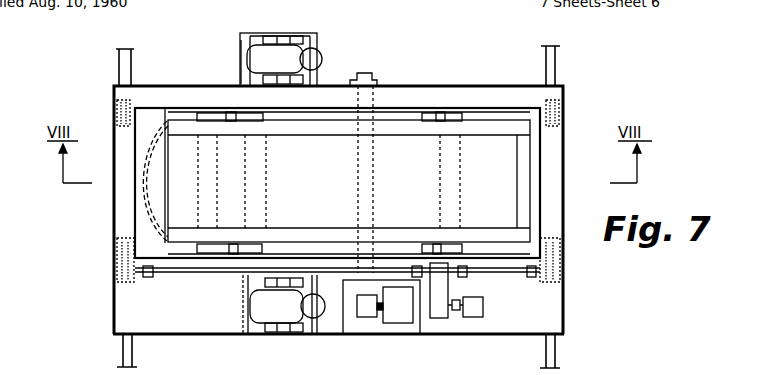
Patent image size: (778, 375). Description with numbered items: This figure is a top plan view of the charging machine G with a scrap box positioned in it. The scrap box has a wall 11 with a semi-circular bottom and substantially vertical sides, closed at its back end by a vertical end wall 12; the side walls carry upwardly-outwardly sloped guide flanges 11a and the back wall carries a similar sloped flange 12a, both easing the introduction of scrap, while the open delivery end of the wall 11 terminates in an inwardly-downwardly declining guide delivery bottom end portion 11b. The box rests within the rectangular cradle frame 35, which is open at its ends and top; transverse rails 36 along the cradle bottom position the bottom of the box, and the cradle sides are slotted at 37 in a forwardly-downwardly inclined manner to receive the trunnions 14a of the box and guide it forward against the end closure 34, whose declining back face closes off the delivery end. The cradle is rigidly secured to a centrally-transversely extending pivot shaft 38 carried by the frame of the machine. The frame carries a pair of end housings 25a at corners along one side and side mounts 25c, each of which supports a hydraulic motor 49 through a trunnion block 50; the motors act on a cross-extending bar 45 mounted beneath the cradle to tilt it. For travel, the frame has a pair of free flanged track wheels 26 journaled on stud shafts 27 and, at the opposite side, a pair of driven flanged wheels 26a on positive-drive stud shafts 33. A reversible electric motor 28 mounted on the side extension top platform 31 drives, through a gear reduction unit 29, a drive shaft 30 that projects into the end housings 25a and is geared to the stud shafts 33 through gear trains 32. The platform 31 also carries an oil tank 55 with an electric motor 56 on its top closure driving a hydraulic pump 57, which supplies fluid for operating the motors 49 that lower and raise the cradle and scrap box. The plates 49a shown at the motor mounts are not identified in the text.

The charging machine G is at (514, 84).
The wall 11 is at (348, 137).
The guide flanges 11a is at (293, 127).
The guide delivery bottom end portion 11b is at (130, 197).
The end wall 12 is at (517, 153).
The sloped flange 12a is at (521, 200).
The trunnions 14a is at (437, 121).
The end housings 25a is at (125, 280).
The side mounts 25c is at (272, 35).
The flanged track wheels 26 is at (115, 100).
The driven flanged wheels 26a is at (117, 235).
The stud shafts 27 is at (114, 122).
The reversible electric motor 28 is at (478, 314).
The gear reduction unit 29 is at (447, 318).
The drive shaft 30 is at (218, 277).
The side extension top platform 31 is at (185, 337).
The gear trains 32 is at (115, 273).
The stud shafts 33 is at (115, 258).
The end closure 34 is at (147, 213).
The cradle frame 35 is at (425, 115).
The transverse rails 36 is at (246, 164).
The slotted guide portions 37 is at (250, 247).
The pivot shaft 38 is at (378, 78).
The bar 45 is at (242, 79).
The hydraulic motor 49 is at (318, 60).
The roller bearing plates 49a is at (293, 35).
The trunnion block 50 is at (310, 33).
The oil tank 55 is at (430, 322).
The electric motor 56 is at (408, 320).
The hydraulic pump 57 is at (370, 317).